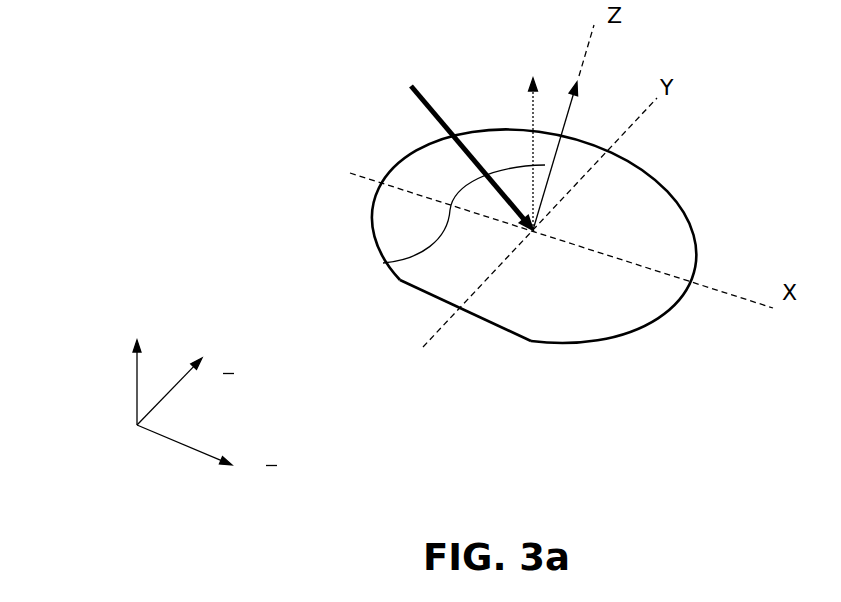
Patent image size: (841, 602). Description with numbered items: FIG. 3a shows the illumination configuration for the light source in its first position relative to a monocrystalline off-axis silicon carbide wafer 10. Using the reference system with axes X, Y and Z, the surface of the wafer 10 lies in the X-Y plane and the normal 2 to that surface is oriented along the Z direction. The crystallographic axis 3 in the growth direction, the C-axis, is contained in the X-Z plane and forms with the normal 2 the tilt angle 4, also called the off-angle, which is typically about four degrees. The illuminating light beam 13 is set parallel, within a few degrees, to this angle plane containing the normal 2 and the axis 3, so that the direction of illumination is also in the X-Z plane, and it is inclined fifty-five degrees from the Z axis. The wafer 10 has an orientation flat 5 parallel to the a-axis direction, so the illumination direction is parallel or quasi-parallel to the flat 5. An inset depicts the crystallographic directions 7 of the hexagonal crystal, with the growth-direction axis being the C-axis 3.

The normal 2 is at (562, 129).
The crystallographic C-axis 3 is at (532, 108).
The tilt angle 4 is at (383, 263).
The orientation flat 5 is at (483, 322).
The crystallographic directions 7 is at (137, 425).
The wafer 10 is at (697, 257).
The illuminating light beam 13 is at (433, 115).